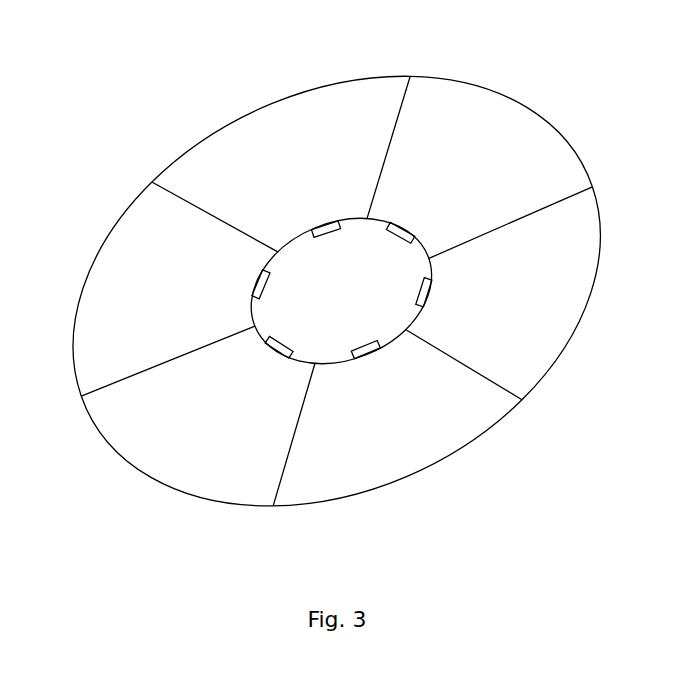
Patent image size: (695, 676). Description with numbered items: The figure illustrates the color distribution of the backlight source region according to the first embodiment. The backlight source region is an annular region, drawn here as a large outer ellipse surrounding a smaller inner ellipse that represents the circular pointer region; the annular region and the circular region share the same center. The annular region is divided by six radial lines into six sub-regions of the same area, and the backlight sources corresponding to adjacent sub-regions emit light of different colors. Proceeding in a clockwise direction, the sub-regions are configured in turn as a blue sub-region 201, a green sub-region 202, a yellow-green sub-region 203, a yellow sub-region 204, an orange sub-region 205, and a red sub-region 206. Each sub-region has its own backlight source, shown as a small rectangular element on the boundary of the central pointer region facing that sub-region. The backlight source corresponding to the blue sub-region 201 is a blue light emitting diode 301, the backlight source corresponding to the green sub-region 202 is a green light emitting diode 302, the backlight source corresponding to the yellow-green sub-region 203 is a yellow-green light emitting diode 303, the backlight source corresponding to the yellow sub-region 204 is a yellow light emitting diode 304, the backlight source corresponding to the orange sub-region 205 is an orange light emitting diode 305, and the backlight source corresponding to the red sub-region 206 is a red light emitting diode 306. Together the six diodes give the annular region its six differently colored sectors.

The blue sub-region 201 is at (213, 432).
The green sub-region 202 is at (188, 248).
The yellow-green sub-region 203 is at (270, 158).
The yellow sub-region 204 is at (467, 154).
The orange sub-region 205 is at (550, 254).
The red sub-region 206 is at (421, 432).
The blue light emitting diode 301 is at (279, 351).
The green light emitting diode 302 is at (259, 285).
The yellow-green light emitting diode 303 is at (323, 226).
The yellow light emitting diode 304 is at (399, 227).
The orange light emitting diode 305 is at (428, 293).
The red light emitting diode 306 is at (367, 353).